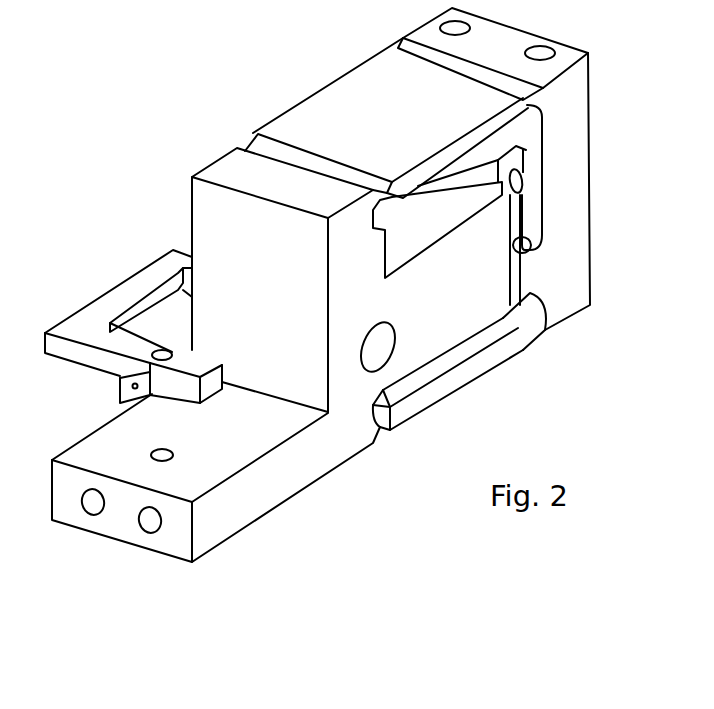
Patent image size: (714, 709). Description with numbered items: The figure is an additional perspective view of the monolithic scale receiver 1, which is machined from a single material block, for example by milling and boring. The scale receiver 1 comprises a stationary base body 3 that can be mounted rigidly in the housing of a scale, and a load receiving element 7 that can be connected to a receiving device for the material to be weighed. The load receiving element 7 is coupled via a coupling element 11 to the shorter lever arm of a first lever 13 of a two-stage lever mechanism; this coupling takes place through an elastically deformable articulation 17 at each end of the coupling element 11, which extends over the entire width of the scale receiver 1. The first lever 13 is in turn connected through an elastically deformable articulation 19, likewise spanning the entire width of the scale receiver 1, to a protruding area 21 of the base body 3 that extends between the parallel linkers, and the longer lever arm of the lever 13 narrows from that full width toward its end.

The scale receiver 1 is at (207, 127).
The base body 3 is at (293, 480).
The load receiving element 7 is at (580, 190).
The coupling element 11 is at (527, 212).
The first lever 13 is at (478, 170).
The elastically deformable articulation 17 is at (522, 176).
The elastically deformable articulation 19 is at (505, 188).
The protruding area 21 is at (477, 327).